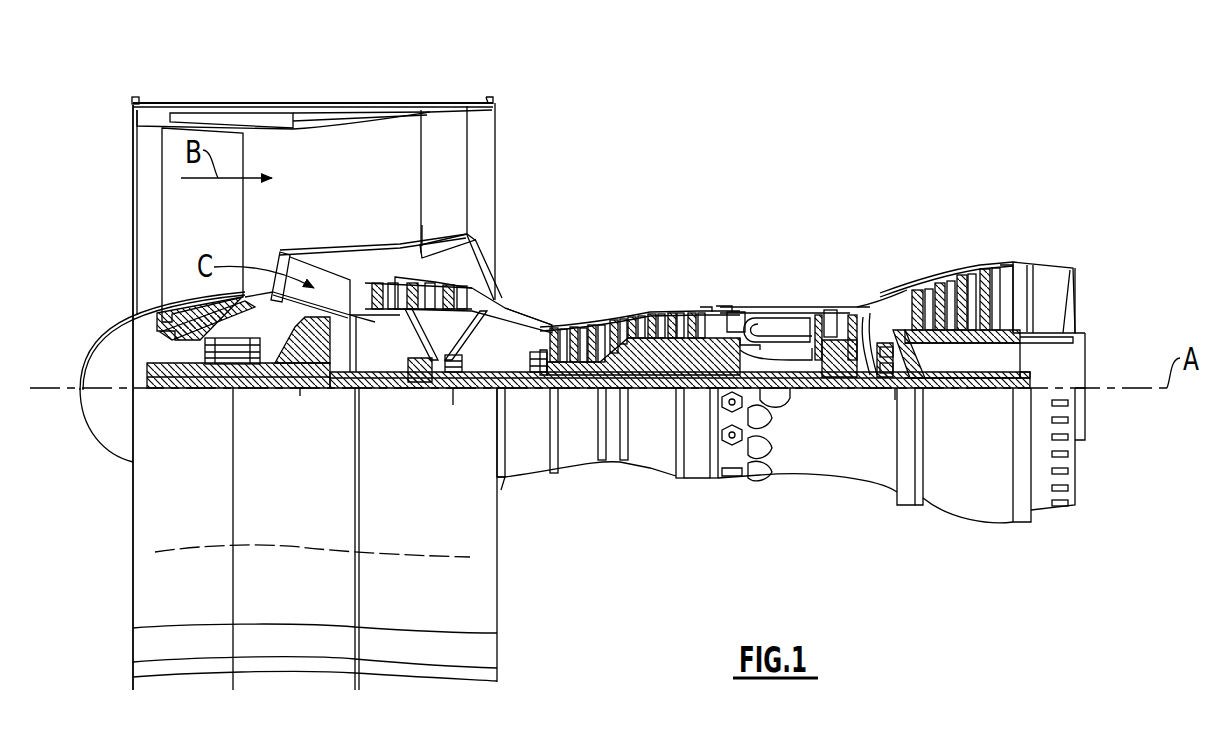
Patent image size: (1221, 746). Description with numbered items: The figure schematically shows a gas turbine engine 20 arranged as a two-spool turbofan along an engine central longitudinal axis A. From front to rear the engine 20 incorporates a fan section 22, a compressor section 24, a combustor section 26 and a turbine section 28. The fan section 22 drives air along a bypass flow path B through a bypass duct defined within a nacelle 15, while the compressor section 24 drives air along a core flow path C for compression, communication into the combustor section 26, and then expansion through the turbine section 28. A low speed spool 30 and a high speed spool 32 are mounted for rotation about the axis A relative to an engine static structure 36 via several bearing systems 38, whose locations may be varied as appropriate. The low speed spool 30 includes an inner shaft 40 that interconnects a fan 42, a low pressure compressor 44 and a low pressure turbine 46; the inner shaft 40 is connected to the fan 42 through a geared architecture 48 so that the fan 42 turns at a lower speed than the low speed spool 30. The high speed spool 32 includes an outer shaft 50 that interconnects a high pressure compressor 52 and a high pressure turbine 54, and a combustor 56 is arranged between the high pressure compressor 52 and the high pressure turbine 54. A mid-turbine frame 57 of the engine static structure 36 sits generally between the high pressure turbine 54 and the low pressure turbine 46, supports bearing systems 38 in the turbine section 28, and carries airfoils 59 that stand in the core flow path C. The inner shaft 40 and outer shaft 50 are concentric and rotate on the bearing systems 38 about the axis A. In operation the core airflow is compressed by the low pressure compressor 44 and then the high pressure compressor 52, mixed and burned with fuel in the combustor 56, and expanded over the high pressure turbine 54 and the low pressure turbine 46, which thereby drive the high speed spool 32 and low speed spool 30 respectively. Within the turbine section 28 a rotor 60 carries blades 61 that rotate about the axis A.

The nacelle 15 is at (317, 108).
The gas turbine engine 20 is at (774, 152).
The fan section 22 is at (243, 92).
The compressor section 24 is at (546, 293).
The combustor section 26 is at (769, 278).
The turbine section 28 is at (917, 245).
The low speed spool 30 is at (652, 397).
The high speed spool 32 is at (700, 337).
The engine static structure 36 is at (692, 480).
The bearing systems 38 is at (455, 390).
The inner shaft 40 is at (523, 390).
The fan 42 is at (218, 233).
The low pressure compressor 44 is at (415, 296).
The low pressure turbine 46 is at (962, 268).
The geared architecture 48 is at (320, 374).
The outer shaft 50 is at (783, 390).
The high pressure compressor 52 is at (622, 352).
The high pressure turbine 54 is at (833, 307).
The combustor 56 is at (767, 327).
The mid-turbine frame 57 is at (880, 296).
The airfoils 59 is at (900, 340).
The rotor 60 is at (1017, 330).
The blades 61 is at (1005, 262).